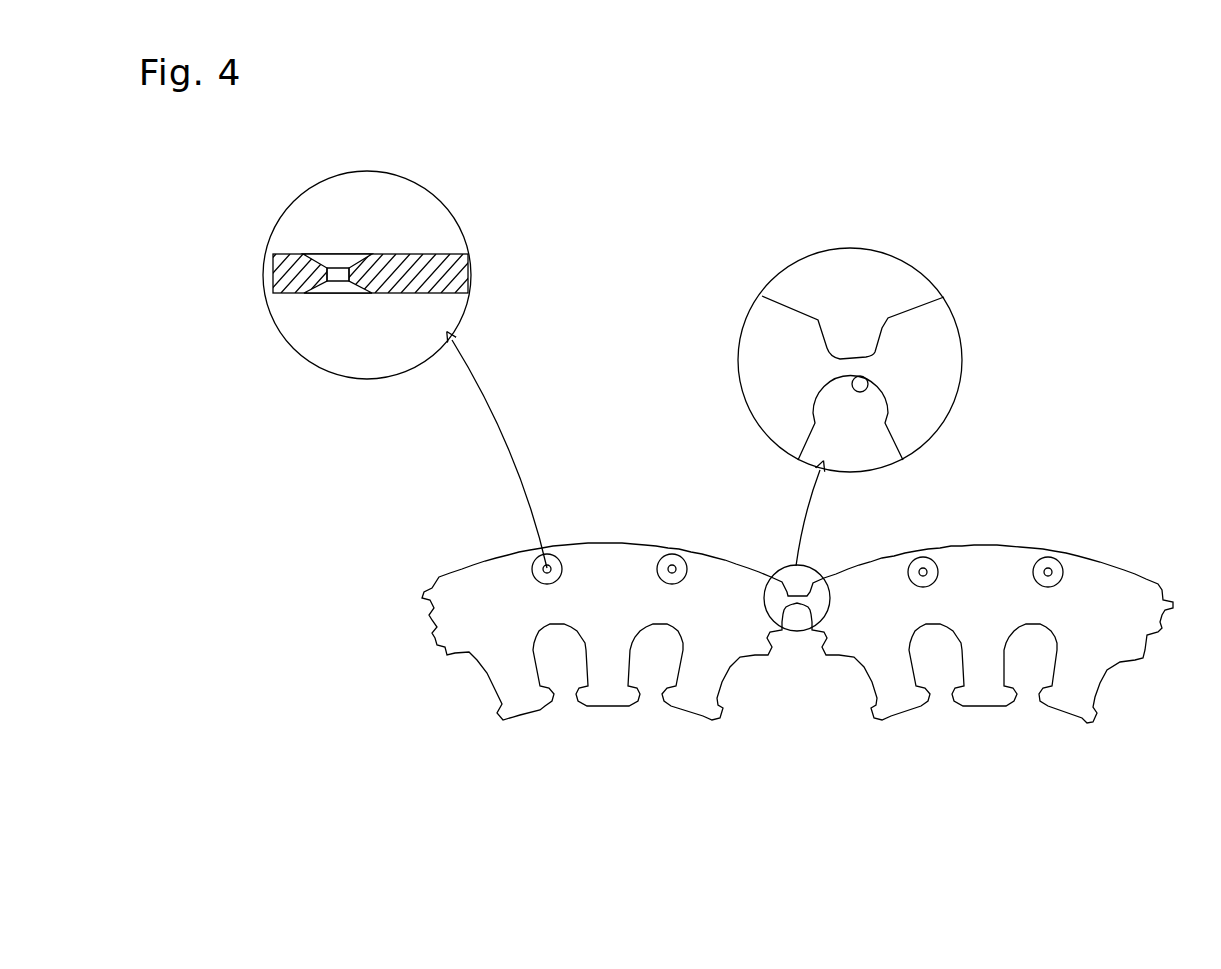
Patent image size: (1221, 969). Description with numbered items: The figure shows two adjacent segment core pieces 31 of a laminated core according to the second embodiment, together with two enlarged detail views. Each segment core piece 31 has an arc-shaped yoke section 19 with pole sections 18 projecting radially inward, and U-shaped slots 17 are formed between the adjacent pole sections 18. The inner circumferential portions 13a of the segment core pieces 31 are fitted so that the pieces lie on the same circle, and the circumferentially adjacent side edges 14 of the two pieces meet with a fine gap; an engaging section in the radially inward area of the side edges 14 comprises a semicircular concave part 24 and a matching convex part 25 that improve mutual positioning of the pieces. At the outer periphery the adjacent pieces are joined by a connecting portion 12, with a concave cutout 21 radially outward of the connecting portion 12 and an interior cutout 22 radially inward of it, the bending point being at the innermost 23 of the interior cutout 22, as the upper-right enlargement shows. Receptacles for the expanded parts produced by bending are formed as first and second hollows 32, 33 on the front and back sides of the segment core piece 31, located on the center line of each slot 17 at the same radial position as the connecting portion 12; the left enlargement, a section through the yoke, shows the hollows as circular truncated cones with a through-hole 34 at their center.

The connecting portion 12 is at (853, 366).
The inner circumferential portion 13a is at (714, 727).
The side edge 14 is at (785, 637).
The slot 17 is at (565, 685).
The pole section 18 is at (522, 700).
The yoke section 19 is at (612, 570).
The concave cutout 21 is at (845, 340).
The interior cutout 22 is at (852, 388).
The innermost of the interior cutout 23 is at (862, 382).
The concave part 24 is at (781, 634).
The convex part 25 is at (814, 634).
The segment core piece 31 is at (490, 587).
The first hollow 32 is at (557, 566).
The second hollow 33 is at (362, 285).
The through-hole 34 is at (543, 568).